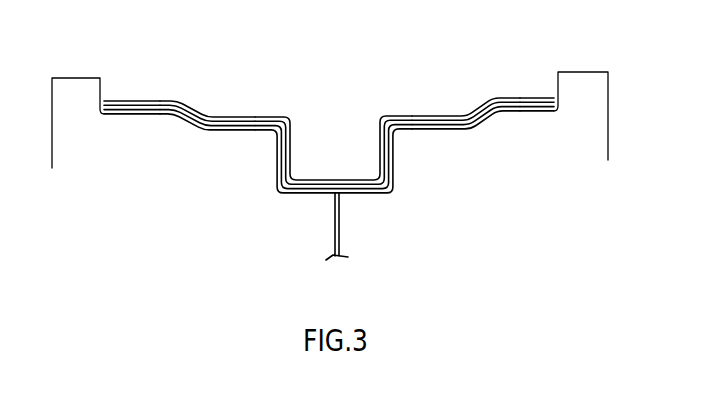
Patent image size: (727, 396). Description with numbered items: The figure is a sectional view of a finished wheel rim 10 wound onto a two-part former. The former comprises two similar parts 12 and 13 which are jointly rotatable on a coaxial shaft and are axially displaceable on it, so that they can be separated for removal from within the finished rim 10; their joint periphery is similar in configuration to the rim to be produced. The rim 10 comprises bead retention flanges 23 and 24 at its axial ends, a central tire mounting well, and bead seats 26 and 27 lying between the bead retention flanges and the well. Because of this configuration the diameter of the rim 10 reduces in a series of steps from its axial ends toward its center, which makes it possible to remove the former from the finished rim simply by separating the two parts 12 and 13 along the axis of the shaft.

The wheel rim 10 is at (329, 148).
The former part 12 is at (158, 218).
The former part 13 is at (481, 218).
The bead retention flange 23 is at (142, 101).
The bead retention flange 24 is at (530, 98).
The bead seat 26 is at (248, 116).
The bead seat 27 is at (427, 116).